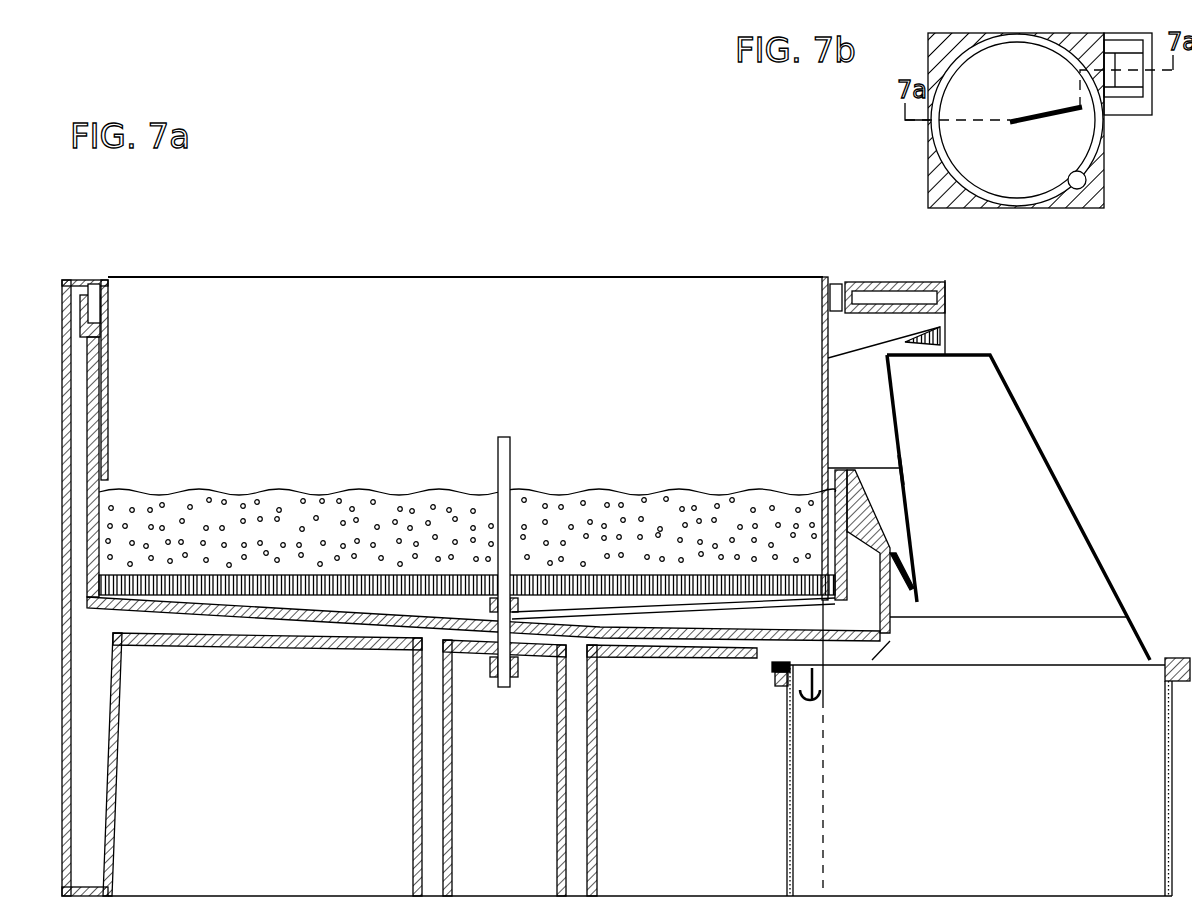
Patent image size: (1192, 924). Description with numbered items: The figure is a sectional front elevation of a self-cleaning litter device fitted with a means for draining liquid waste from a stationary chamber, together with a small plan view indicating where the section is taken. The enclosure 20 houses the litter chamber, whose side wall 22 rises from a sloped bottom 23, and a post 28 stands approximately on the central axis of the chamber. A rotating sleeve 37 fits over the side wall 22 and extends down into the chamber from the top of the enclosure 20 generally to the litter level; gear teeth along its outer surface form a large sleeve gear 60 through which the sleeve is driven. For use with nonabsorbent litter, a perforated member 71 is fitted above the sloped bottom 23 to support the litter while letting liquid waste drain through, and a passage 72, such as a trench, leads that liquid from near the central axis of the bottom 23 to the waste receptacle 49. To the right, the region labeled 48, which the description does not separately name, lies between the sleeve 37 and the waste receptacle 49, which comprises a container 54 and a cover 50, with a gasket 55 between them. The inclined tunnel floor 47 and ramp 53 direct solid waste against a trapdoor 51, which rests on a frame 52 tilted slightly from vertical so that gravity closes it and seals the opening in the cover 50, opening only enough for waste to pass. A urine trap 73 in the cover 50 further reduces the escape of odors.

The enclosure 20 is at (72, 806).
The side wall 22 is at (97, 455).
The bottom 23 is at (382, 618).
The post 28 is at (500, 437).
The sleeve 37 is at (562, 340).
The tunnel floor 47 is at (873, 537).
The chamber 48 is at (857, 400).
The waste receptacle 49 is at (988, 795).
The cover 50 is at (1052, 470).
The trapdoor 51 is at (905, 475).
The frame 52 is at (893, 432).
The ramp 53 is at (908, 565).
The container 54 is at (1032, 795).
The gasket 55 is at (778, 688).
The sleeve gear 60 is at (95, 287).
The perforated member 71 is at (262, 598).
The passage 72 is at (762, 645).
The urine trap 73 is at (815, 706).